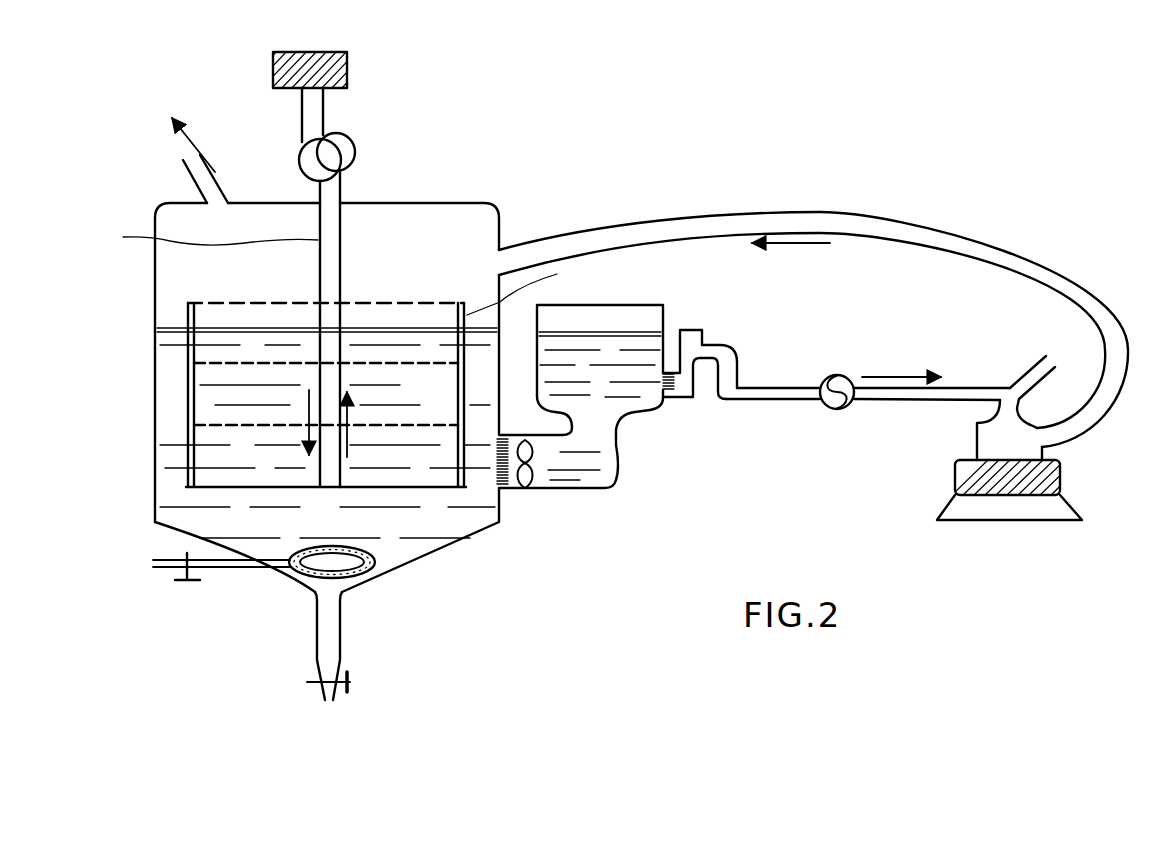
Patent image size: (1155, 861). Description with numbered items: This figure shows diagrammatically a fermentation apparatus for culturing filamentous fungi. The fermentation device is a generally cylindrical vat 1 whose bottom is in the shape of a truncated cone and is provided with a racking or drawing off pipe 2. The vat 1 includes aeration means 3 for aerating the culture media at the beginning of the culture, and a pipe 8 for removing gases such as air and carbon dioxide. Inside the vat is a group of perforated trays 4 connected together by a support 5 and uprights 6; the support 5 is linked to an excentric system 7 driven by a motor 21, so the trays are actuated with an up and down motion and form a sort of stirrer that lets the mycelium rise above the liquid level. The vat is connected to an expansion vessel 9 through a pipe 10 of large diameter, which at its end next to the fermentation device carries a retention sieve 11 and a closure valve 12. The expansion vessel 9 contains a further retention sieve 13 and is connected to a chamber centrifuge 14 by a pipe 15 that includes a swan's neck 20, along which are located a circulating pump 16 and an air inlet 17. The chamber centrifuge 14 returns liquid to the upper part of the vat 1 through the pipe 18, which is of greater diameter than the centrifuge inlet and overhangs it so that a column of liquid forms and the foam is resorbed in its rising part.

The vat 1 is at (481, 200).
The racking pipe 2 is at (315, 645).
The aeration means 3 is at (370, 570).
The perforated trays 4 is at (181, 306).
The support 5 is at (210, 237).
The uprights 6 is at (522, 290).
The excentric system 7 is at (324, 110).
The gas removal pipe 8 is at (214, 177).
The expansion vessel 9 is at (615, 382).
The pipe 10 is at (620, 488).
The retention sieve 11 is at (499, 476).
The closure valve 12 is at (533, 481).
The retention sieve 13 is at (668, 397).
The chamber centrifuge 14 is at (1064, 474).
The pipe 15 is at (912, 393).
The circulating pump 16 is at (830, 410).
The air inlet 17 is at (1040, 366).
The pipe 18 is at (910, 238).
The swan's neck 20 is at (720, 345).
The motor 21 is at (349, 68).